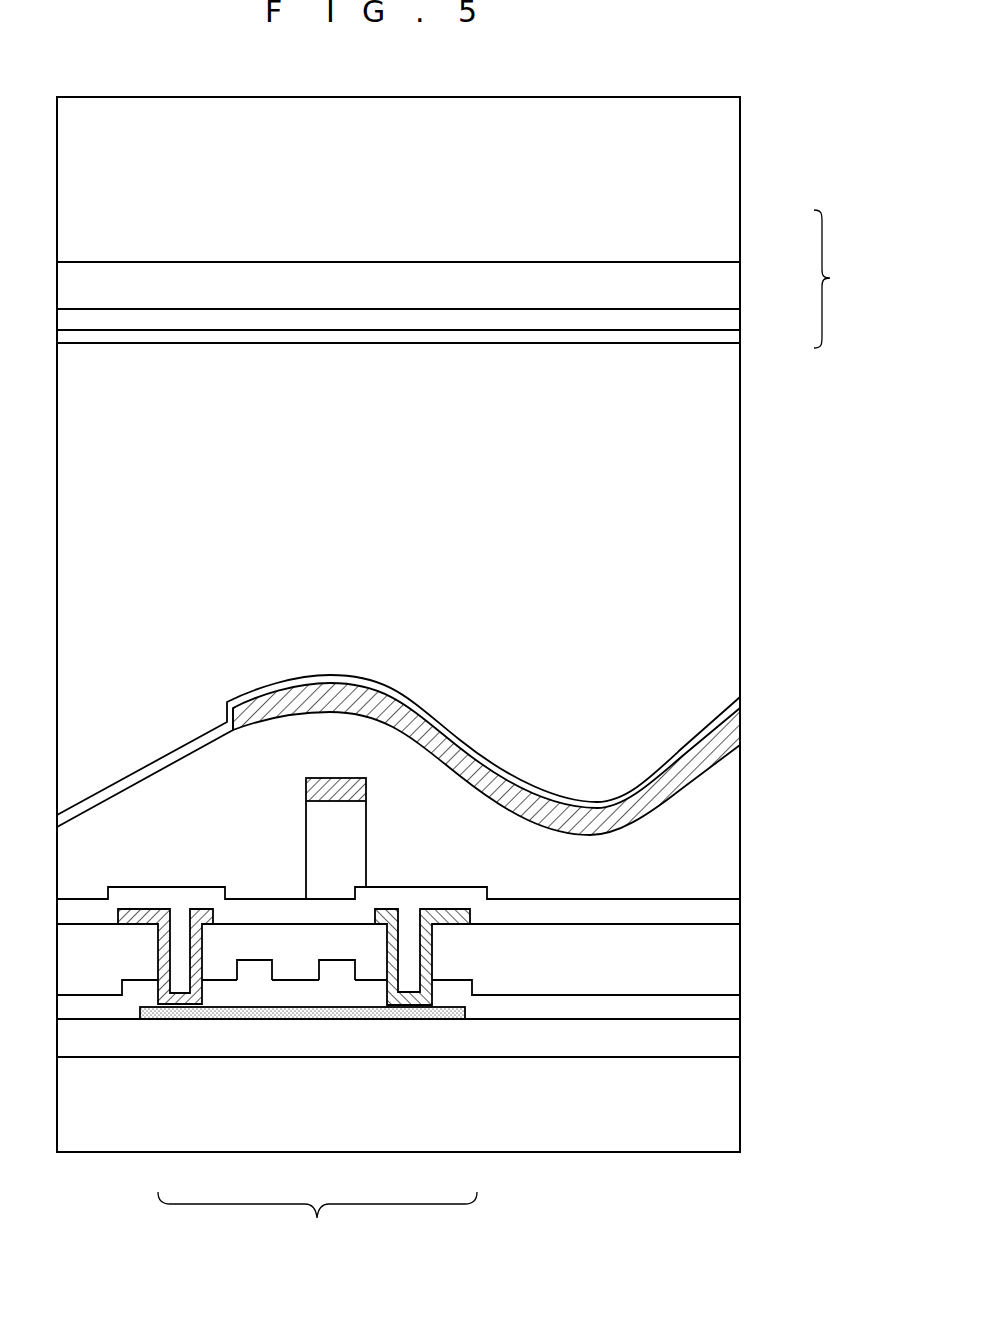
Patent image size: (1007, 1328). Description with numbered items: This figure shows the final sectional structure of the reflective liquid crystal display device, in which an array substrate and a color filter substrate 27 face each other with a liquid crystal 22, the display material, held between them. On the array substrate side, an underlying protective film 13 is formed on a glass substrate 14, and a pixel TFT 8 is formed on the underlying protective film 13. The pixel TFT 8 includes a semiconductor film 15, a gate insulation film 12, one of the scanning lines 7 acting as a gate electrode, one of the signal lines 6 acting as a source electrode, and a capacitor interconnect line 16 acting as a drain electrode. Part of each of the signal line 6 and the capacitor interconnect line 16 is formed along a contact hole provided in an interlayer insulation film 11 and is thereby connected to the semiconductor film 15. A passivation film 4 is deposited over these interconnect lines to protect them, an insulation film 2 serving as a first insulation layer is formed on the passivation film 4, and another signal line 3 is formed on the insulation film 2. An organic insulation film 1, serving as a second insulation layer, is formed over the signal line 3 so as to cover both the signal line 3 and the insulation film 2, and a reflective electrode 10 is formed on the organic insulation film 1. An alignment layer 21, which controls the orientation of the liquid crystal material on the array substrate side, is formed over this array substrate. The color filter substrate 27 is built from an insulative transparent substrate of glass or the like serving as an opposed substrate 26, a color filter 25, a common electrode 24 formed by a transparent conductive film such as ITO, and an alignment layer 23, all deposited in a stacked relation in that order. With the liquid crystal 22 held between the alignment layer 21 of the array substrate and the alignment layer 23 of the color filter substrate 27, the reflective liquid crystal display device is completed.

The organic insulation film 1 is at (730, 832).
The insulation film 2 is at (350, 852).
The signal line 3 is at (366, 790).
The passivation film 4 is at (728, 910).
The signal line 6 is at (147, 909).
The scanning line 7 is at (262, 974).
The pixel TFT 8 is at (317, 1219).
The reflective electrode 10 is at (735, 730).
The interlayer insulation film 11 is at (728, 966).
The gate insulation film 12 is at (728, 1008).
The underlying protective film 13 is at (728, 1043).
The glass substrate 14 is at (728, 1091).
The semiconductor film 15 is at (372, 1012).
The capacitor interconnect line 16 is at (460, 909).
The alignment layer 21 is at (740, 703).
The liquid crystal 22 is at (725, 593).
The alignment layer 23 is at (728, 342).
The common electrode 24 is at (728, 314).
The color filter 25 is at (725, 287).
The opposed substrate 26 is at (725, 222).
The color filter substrate 27 is at (837, 279).